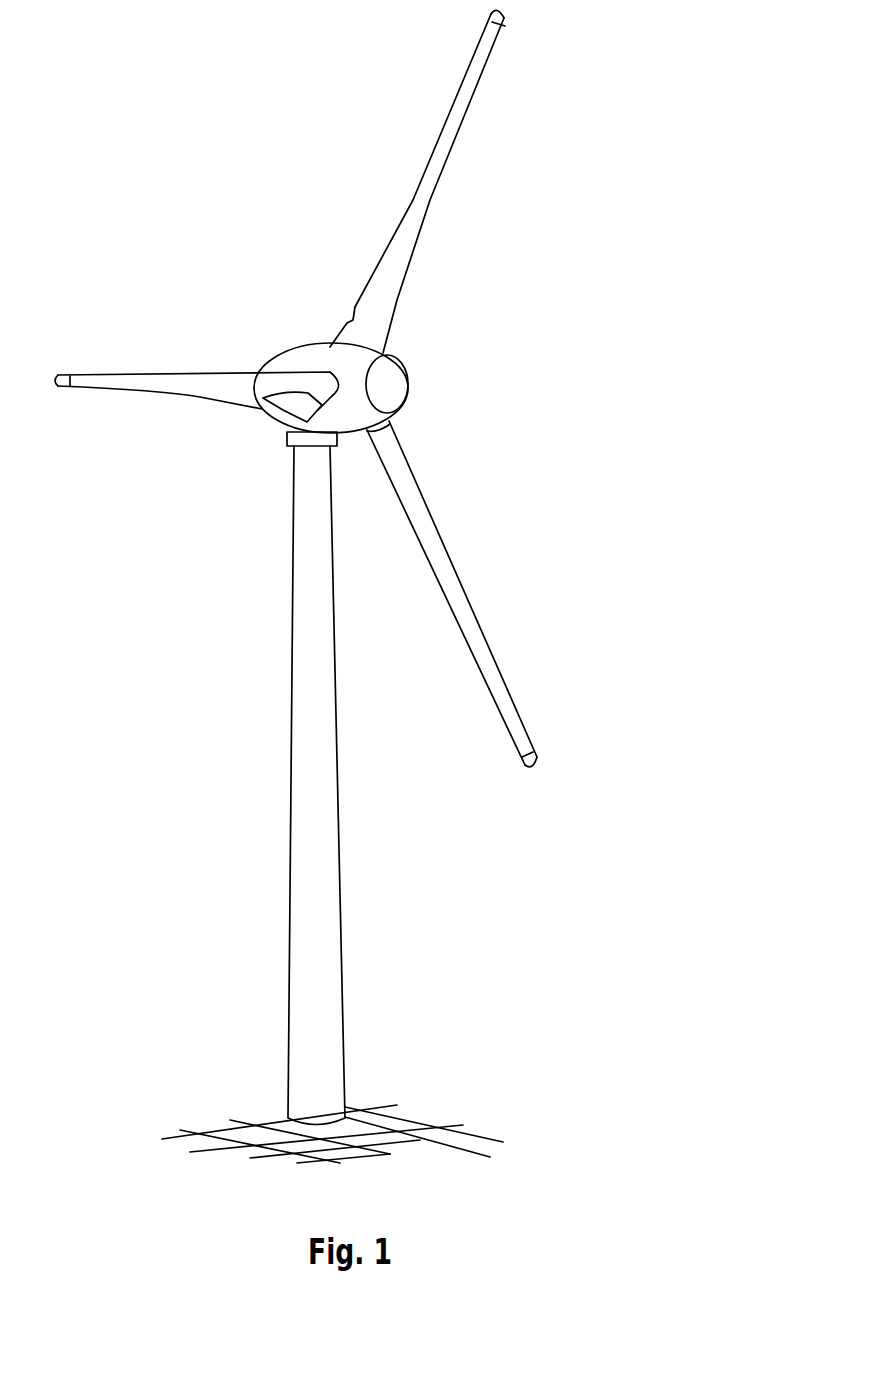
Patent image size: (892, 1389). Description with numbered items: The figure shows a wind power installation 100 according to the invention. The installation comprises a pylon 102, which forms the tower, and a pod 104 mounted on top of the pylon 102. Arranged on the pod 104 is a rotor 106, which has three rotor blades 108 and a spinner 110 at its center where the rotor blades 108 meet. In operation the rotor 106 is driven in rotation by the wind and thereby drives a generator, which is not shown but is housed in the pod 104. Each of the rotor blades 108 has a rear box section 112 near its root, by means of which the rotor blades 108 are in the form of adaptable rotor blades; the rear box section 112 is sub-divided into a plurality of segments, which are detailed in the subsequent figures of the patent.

The wind power installation 100 is at (221, 572).
The pylon 102 is at (322, 882).
The pod 104 is at (303, 360).
The rotor 106 is at (474, 304).
The rotor blades 108 is at (452, 137).
The spinner 110 is at (392, 383).
The rear box section 112 is at (344, 326).